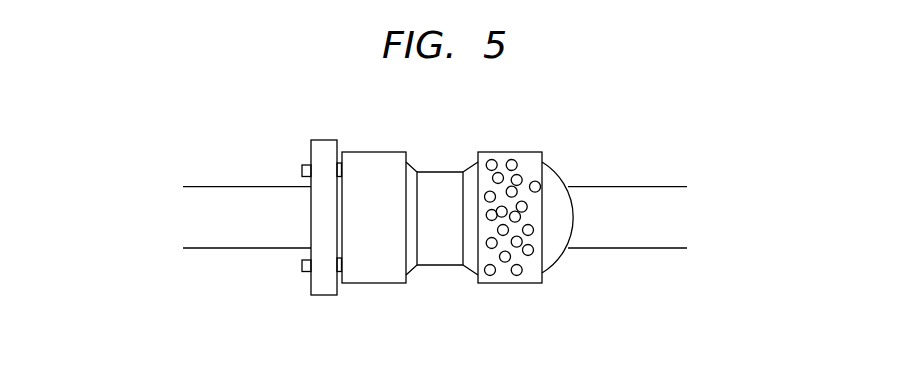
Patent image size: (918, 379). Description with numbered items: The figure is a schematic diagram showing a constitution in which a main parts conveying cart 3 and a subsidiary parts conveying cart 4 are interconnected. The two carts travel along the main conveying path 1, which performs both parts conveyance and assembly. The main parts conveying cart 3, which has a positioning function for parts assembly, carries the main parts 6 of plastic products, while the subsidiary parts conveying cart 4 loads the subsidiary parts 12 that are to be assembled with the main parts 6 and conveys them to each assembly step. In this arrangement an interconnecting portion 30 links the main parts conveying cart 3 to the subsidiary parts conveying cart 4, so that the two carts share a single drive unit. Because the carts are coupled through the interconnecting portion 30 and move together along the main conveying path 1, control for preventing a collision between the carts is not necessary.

The main conveying path 1 is at (636, 195).
The main parts conveying cart 3 is at (375, 157).
The subsidiary parts conveying cart 4 is at (557, 185).
The main parts 6 is at (325, 292).
The subsidiary parts 12 is at (516, 272).
The interconnecting portion 30 is at (440, 178).